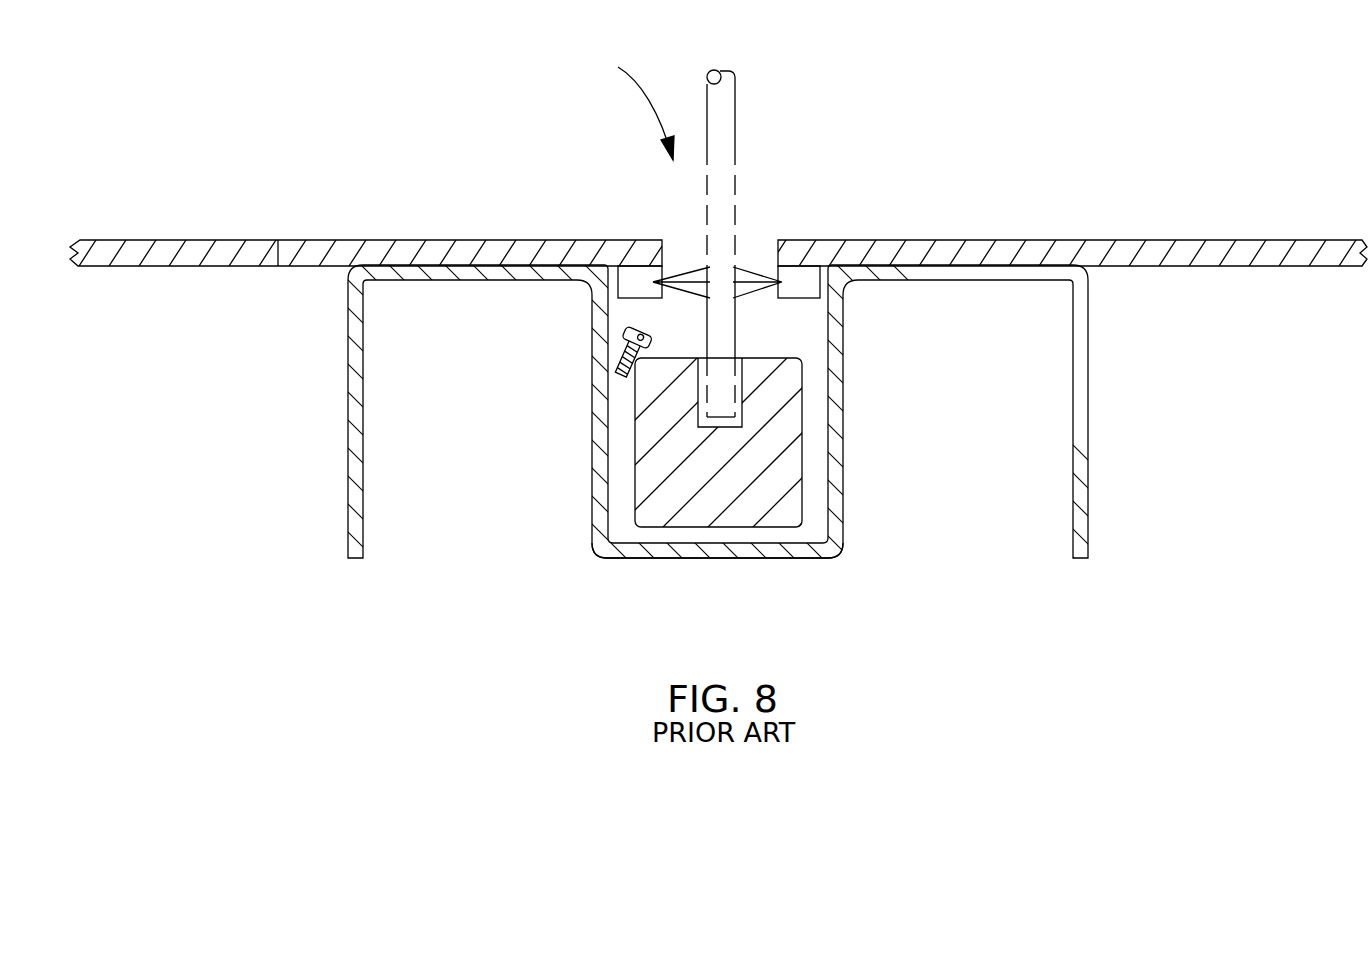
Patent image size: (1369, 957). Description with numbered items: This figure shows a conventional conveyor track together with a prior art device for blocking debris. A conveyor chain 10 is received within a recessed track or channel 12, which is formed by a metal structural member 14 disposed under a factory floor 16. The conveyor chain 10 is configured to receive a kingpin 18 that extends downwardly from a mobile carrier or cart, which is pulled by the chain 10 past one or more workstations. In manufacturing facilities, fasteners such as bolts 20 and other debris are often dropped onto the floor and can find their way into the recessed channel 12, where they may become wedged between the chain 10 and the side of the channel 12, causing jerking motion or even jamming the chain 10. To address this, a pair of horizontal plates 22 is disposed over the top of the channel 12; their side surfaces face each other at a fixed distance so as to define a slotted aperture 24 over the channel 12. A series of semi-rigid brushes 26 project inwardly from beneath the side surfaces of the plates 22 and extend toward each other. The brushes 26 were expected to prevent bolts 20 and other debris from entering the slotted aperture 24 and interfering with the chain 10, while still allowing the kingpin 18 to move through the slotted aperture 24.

The conveyor chain 10 is at (767, 478).
The recessed track or channel 12 is at (797, 327).
The metal structural member 14 is at (652, 560).
The factory floor 16 is at (123, 253).
The kingpin 18 is at (727, 130).
The bolt 20 is at (620, 352).
The horizontal plates 22 is at (400, 242).
The slotted aperture 24 is at (635, 102).
The semi-rigid brushes 26 is at (695, 268).